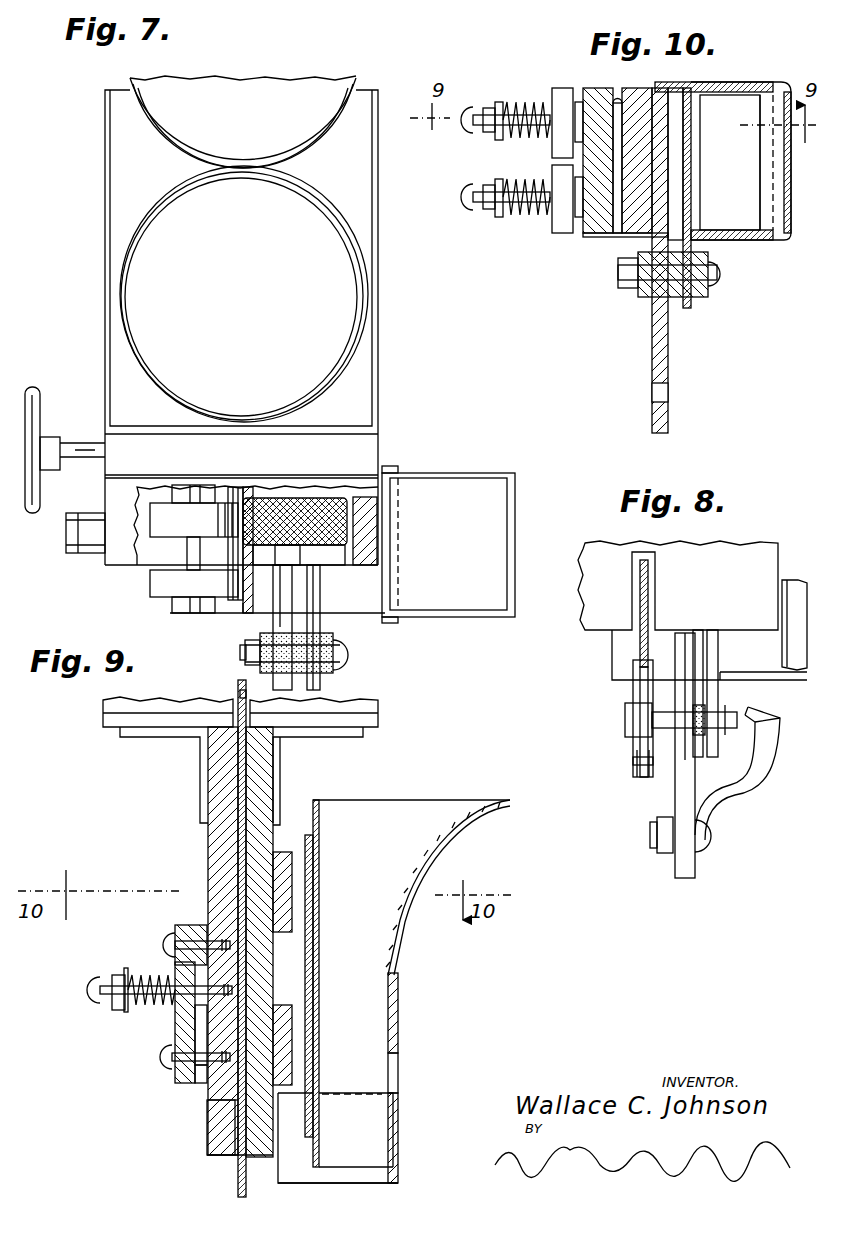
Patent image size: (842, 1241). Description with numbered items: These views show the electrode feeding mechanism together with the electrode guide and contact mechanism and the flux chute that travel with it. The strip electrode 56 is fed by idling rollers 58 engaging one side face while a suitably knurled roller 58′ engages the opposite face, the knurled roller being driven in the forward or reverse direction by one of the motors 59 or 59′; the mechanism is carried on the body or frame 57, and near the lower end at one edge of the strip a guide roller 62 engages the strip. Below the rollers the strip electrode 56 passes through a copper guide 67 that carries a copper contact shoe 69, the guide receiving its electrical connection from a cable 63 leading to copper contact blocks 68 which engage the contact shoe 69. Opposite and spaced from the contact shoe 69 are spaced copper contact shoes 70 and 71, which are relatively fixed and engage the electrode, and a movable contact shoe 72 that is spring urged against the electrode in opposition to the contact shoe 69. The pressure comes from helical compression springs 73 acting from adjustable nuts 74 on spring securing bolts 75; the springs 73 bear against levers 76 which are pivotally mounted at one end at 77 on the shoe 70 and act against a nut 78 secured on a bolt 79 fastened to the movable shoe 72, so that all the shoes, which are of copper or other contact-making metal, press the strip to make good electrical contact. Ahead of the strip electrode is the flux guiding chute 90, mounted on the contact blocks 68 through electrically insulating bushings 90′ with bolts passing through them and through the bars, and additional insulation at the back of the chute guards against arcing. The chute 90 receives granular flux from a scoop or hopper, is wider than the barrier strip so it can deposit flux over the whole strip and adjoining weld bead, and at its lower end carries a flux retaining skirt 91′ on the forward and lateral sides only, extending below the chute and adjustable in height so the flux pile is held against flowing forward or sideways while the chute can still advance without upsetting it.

In FIG. 7, the strip electrode 56 is at (250, 603).
In FIG. 9, the strip electrode 56 is at (241, 695).
In FIG. 10, the strip electrode 56 is at (618, 100).
In FIG. 8, the strip electrode 56 is at (640, 587).
In FIG. 7, the frame 57 is at (385, 375).
In FIG. 9, the frame 57 is at (378, 712).
In FIG. 8, the frame 57 is at (678, 585).
In FIG. 7, the idling rollers 58 is at (162, 583).
In FIG. 7, the knurled roller 58′ is at (350, 522).
In FIG. 7, the motor 59 is at (244, 294).
In FIG. 7, the motor 59′ is at (243, 122).
In FIG. 8, the guide roller 62 is at (633, 745).
In FIG. 8, the cable 63 is at (770, 745).
In FIG. 7, the copper guide 67 is at (230, 605).
In FIG. 9, the copper guide 67 is at (218, 1160).
In FIG. 10, the copper guide 67 is at (610, 237).
In FIG. 8, the copper guide 67 is at (612, 660).
In FIG. 7, the copper contact blocks 68 is at (283, 678).
In FIG. 9, the copper contact blocks 68 is at (285, 865).
In FIG. 10, the copper contact blocks 68 is at (668, 357).
In FIG. 8, the copper contact blocks 68 is at (683, 785).
In FIG. 9, the copper contact shoe 69 is at (260, 805).
In FIG. 9, the contact shoe 70 is at (216, 860).
In FIG. 9, the contact shoe 71 is at (212, 1135).
In FIG. 9, the movable contact shoe 72 is at (207, 1100).
In FIG. 9, the helical compression springs 73 is at (140, 982).
In FIG. 10, the helical compression springs 73 is at (522, 182).
In FIG. 9, the adjustable nuts 74 is at (115, 1002).
In FIG. 10, the adjustable nuts 74 is at (493, 183).
In FIG. 9, the spring securing bolts 75 is at (88, 990).
In FIG. 9, the levers 76 is at (178, 1028).
In FIG. 10, the levers 76 is at (565, 90).
In FIG. 9, the pivot 77 is at (176, 932).
In FIG. 9, the nut 78 is at (195, 1082).
In FIG. 9, the bolt 79 is at (160, 1057).
In FIG. 7, the flux guiding chute 90 is at (508, 570).
In FIG. 9, the flux guiding chute 90 is at (480, 803).
In FIG. 10, the flux guiding chute 90 is at (762, 152).
In FIG. 8, the flux guiding chute 90 is at (787, 652).
In FIG. 7, the electrically insulating bushings 90′ is at (340, 672).
In FIG. 10, the electrically insulating bushings 90′ is at (640, 300).
In FIG. 9, the flux retaining skirt 91′ is at (398, 1172).
In FIG. 10, the flux retaining skirt 91′ is at (762, 182).